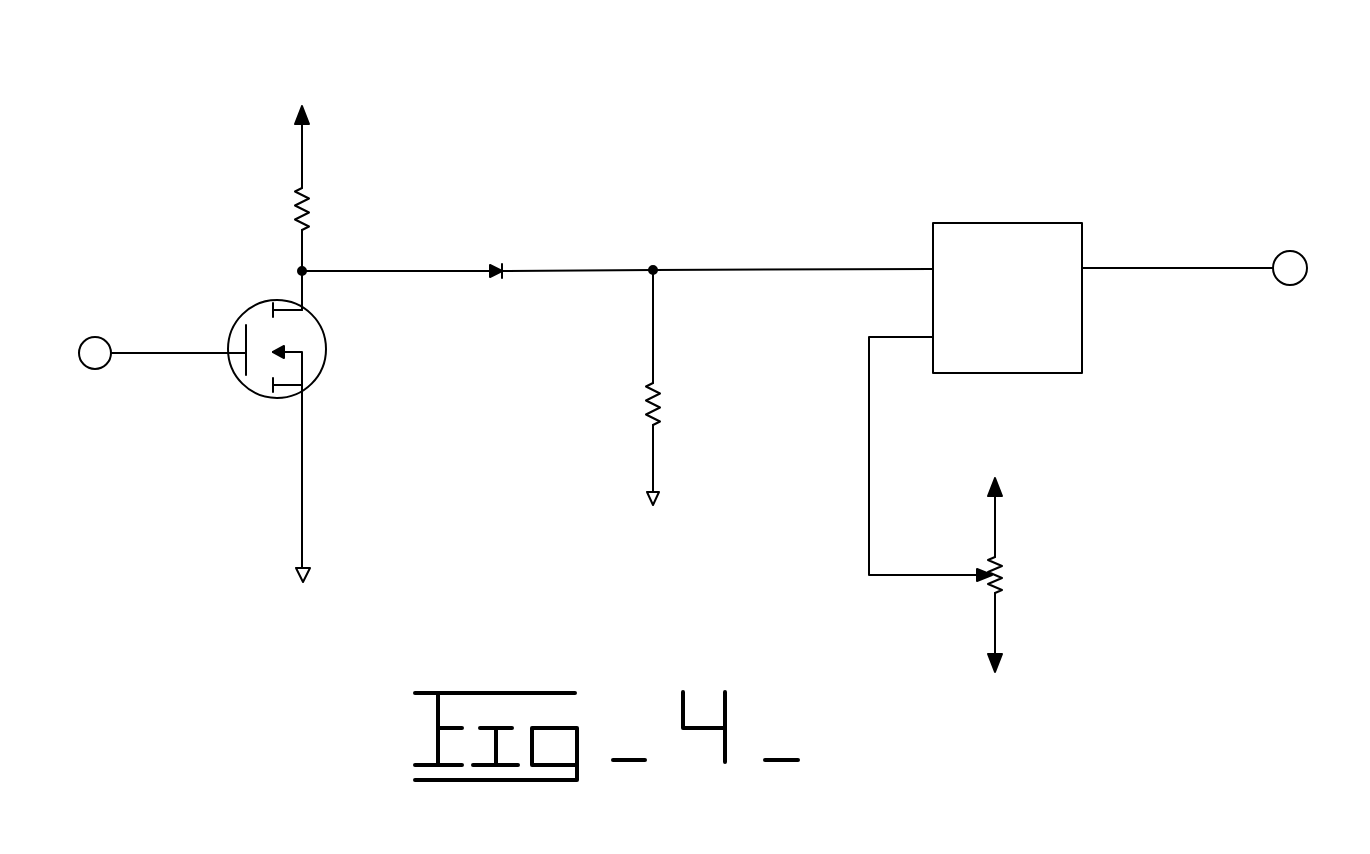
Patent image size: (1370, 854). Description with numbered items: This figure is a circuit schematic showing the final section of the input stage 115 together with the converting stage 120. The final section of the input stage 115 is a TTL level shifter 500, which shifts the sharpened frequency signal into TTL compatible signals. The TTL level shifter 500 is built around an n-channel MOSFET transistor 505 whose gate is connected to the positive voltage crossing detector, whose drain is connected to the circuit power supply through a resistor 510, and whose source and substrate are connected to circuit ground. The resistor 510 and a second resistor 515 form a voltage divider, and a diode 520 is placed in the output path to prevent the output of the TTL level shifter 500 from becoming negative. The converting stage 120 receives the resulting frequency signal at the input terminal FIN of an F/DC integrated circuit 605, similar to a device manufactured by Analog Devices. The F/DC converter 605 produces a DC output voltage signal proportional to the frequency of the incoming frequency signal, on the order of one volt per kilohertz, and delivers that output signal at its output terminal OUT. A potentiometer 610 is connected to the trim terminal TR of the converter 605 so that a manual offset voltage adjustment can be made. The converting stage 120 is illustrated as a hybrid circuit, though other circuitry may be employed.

The TTL level shifter 500 is at (480, 98).
The n-channel MOSFET transistor 505 is at (240, 324).
The resistor 510 is at (306, 193).
The resistor 515 is at (657, 386).
The diode 520 is at (504, 270).
The F/DC integrated circuit 605 is at (1049, 223).
The potentiometer 610 is at (1000, 562).
The input stage 115 is at (722, 423).
The converting stage 120 is at (1117, 468).